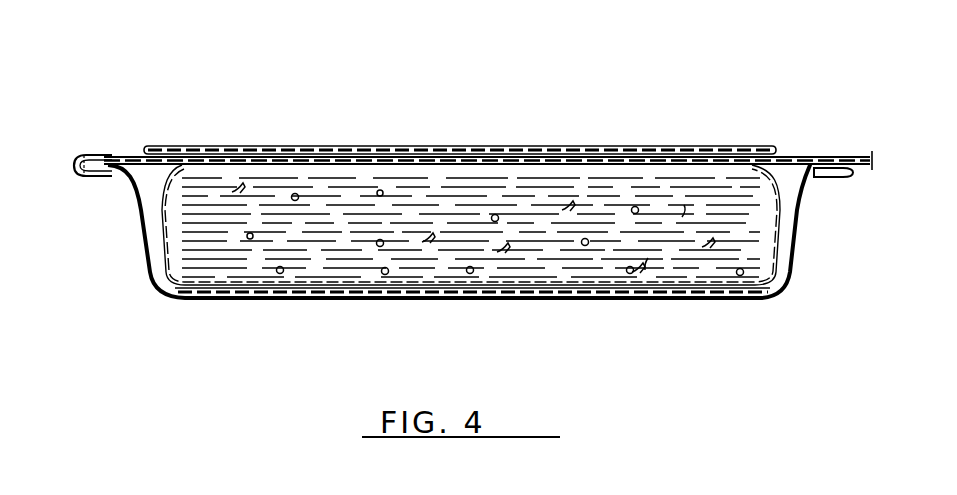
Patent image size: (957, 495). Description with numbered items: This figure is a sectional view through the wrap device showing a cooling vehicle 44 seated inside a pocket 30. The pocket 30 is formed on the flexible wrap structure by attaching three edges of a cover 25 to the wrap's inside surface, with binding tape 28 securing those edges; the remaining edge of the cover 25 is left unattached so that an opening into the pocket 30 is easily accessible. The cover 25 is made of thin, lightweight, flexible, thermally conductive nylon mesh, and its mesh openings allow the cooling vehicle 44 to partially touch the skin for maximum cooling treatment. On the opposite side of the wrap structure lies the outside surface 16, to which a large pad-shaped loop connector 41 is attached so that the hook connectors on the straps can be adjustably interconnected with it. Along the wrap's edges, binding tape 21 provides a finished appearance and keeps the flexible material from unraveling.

The outside surface 16 is at (493, 155).
The binding tape 21 is at (93, 156).
The cover 25 is at (418, 300).
The binding tape 28 is at (830, 178).
The pocket 30 is at (153, 178).
The loop connector 41 is at (272, 150).
The cooling vehicle 44 is at (318, 192).